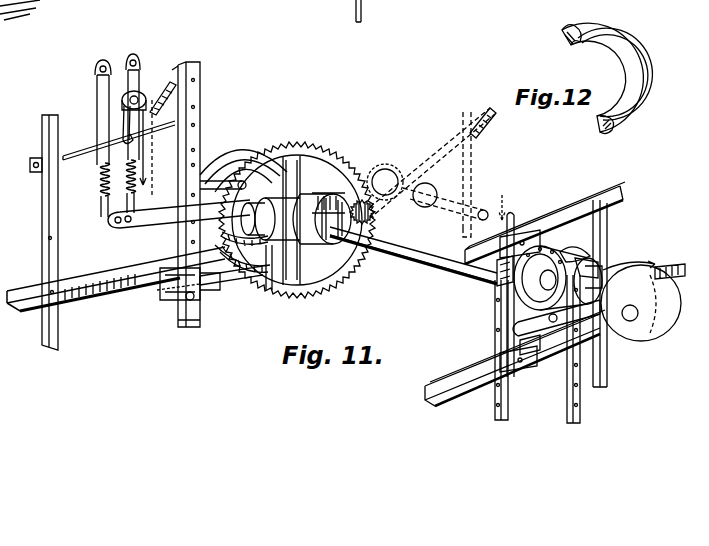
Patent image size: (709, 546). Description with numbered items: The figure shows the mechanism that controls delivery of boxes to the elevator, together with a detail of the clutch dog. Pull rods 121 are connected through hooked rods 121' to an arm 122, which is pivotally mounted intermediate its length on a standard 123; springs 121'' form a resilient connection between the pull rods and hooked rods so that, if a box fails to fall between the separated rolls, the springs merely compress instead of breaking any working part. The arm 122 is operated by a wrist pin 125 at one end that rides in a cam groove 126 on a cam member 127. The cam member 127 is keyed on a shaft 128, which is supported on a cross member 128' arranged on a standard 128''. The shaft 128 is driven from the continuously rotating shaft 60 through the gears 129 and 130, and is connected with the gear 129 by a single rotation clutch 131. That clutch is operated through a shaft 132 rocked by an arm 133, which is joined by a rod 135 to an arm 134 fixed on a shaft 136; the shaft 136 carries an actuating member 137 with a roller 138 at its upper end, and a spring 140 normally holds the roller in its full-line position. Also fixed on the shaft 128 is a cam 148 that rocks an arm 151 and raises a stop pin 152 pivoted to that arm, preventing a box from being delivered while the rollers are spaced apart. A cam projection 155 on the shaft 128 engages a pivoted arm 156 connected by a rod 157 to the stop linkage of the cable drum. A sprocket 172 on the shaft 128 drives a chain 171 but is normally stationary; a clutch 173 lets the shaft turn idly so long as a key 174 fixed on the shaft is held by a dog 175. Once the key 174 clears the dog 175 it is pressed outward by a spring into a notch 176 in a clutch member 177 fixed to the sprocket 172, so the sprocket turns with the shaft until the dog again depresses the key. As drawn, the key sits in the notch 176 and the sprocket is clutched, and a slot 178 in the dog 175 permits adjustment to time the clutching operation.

In FIG. 11, the shaft 60 is at (445, 198).
In FIG. 11, the pull rods 121 is at (117, 99).
In FIG. 11, the hooked rods 121' is at (103, 208).
In FIG. 11, the springs 121'' is at (102, 178).
In FIG. 11, the arm 122 is at (145, 222).
In FIG. 11, the standard 123 is at (190, 158).
In FIG. 11, the wrist pin 125 is at (236, 157).
In FIG. 11, the cam groove 126 is at (258, 165).
In FIG. 11, the cam member 127 is at (268, 165).
In FIG. 11, the shaft 128 is at (413, 255).
In FIG. 11, the cross member 128' is at (116, 278).
In FIG. 11, the standard 128'' is at (29, 232).
In FIG. 11, the gear 129 is at (330, 166).
In FIG. 11, the gear 130 is at (378, 170).
In FIG. 11, the single rotation clutch 131 is at (278, 272).
In FIG. 11, the shaft 132 is at (221, 287).
In FIG. 11, the arm 133 is at (166, 283).
In FIG. 11, the arm 134 is at (161, 94).
In FIG. 11, the rod 135 is at (158, 150).
In FIG. 11, the shaft 136 is at (72, 153).
In FIG. 11, the actuating member 137 is at (122, 123).
In FIG. 11, the roller 138 is at (140, 95).
In FIG. 11, the spring 140 is at (168, 72).
In FIG. 11, the cam 148 is at (647, 332).
In FIG. 11, the arm 151 is at (573, 326).
In FIG. 11, the stop pin 152 is at (512, 221).
In FIG. 11, the cam projection 155 is at (375, 218).
In FIG. 11, the pivoted arm 156 is at (446, 152).
In FIG. 11, the rod 157 is at (473, 158).
In FIG. 11, the chain 171 is at (495, 403).
In FIG. 11, the sprocket 172 is at (540, 257).
In FIG. 11, the clutch 173 is at (537, 303).
In FIG. 11, the key 174 is at (593, 270).
In FIG. 11, the dog 175 is at (577, 253).
In FIG. 12, the dog 175 is at (616, 114).
In FIG. 11, the notch 176 is at (553, 264).
In FIG. 11, the clutch member 177 is at (587, 258).
In FIG. 12, the slot 178 is at (640, 72).